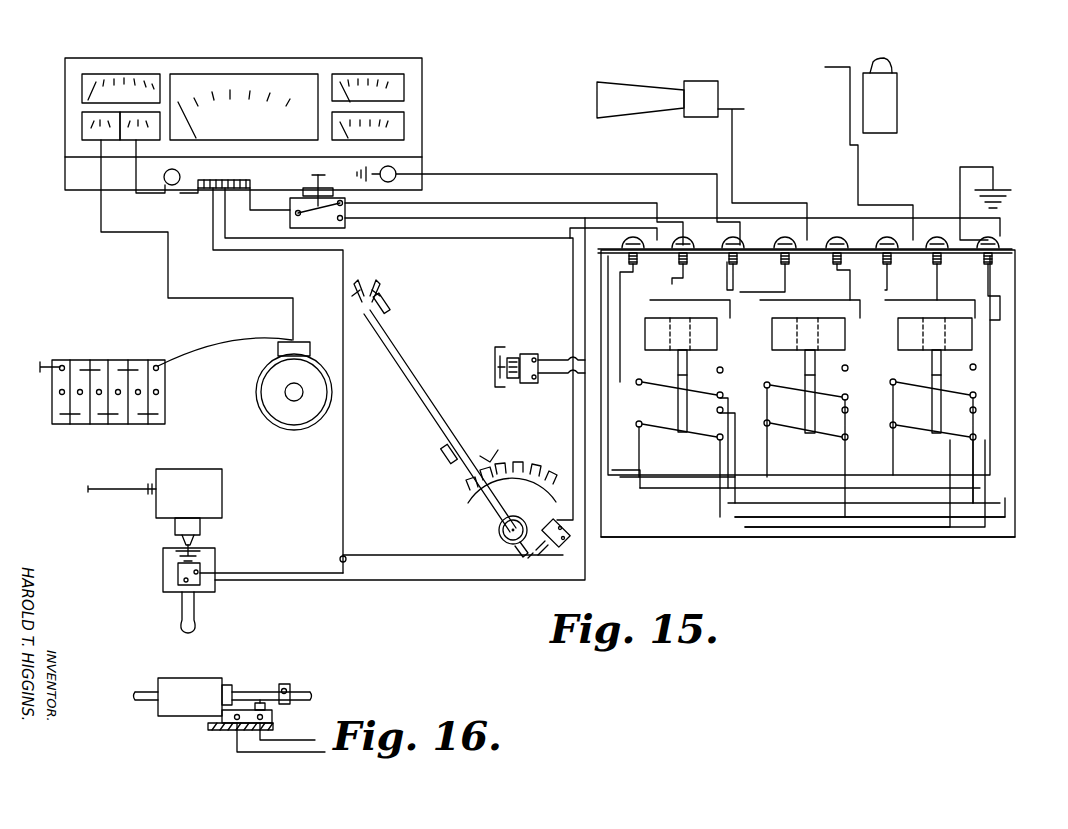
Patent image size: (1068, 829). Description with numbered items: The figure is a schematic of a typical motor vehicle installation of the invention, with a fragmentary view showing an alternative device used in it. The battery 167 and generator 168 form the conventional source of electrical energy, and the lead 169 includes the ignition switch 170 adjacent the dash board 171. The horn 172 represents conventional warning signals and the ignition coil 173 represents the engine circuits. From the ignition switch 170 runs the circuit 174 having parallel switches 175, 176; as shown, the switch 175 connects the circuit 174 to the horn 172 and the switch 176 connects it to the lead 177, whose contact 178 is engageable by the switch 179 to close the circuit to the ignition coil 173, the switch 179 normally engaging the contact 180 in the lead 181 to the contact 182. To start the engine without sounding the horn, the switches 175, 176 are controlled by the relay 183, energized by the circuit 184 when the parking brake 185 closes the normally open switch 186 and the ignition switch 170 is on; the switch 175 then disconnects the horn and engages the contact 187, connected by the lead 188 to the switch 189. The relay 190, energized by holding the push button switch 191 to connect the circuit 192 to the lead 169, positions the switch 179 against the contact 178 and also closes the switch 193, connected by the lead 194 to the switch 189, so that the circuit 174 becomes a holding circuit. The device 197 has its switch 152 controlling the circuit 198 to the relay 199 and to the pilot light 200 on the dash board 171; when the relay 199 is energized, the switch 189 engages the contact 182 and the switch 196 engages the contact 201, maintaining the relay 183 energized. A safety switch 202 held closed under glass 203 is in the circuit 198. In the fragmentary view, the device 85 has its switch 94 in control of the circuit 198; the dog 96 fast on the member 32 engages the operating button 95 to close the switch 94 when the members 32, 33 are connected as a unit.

In FIG. 15, the dash board 171 is at (72, 118).
In FIG. 15, the ignition switch 170 is at (168, 185).
In FIG. 15, the push button switch 191 is at (306, 184).
In FIG. 15, the pilot light 200 is at (400, 172).
In FIG. 15, the switch 193 is at (504, 190).
In FIG. 15, the circuit 192 is at (540, 218).
In FIG. 15, the horn 172 is at (700, 95).
In FIG. 15, the ignition coil 173 is at (885, 97).
In FIG. 15, the circuit 174 is at (446, 240).
In FIG. 15, the circuit 184 is at (572, 280).
In FIG. 15, the lead 169 is at (168, 264).
In FIG. 15, the generator 168 is at (256, 392).
In FIG. 15, the battery 167 is at (100, 424).
In FIG. 15, the device 197 is at (152, 540).
In FIG. 15, the switch 152 is at (185, 570).
In FIG. 15, the glass 203 is at (493, 362).
In FIG. 15, the safety switch 202 is at (533, 384).
In FIG. 15, the parking brake 185 is at (460, 423).
In FIG. 15, the switch 186 is at (573, 520).
In FIG. 15, the circuit 198 is at (510, 580).
In FIG. 16, the circuit 198 is at (286, 754).
In FIG. 15, the relay 199 is at (658, 318).
In FIG. 15, the relay 183 is at (790, 318).
In FIG. 15, the relay 190 is at (912, 318).
In FIG. 15, the switch 196 is at (672, 372).
In FIG. 15, the contact 201 is at (721, 373).
In FIG. 15, the contact 182 is at (717, 411).
In FIG. 15, the switch 189 is at (645, 427).
In FIG. 15, the switch 176 is at (800, 370).
In FIG. 15, the switch 175 is at (796, 424).
In FIG. 15, the contact 187 is at (844, 414).
In FIG. 15, the contact 178 is at (976, 410).
In FIG. 15, the switch 179 is at (952, 434).
In FIG. 15, the contact 180 is at (972, 442).
In FIG. 15, the lead 188 is at (674, 490).
In FIG. 15, the lead 181 is at (805, 520).
In FIG. 15, the lead 194 is at (846, 505).
In FIG. 15, the lead 177 is at (930, 537).
In FIG. 16, the device 85 is at (207, 683).
In FIG. 16, the member 33 is at (146, 690).
In FIG. 16, the member 32 is at (300, 692).
In FIG. 16, the dog 96 is at (285, 684).
In FIG. 16, the operating button 95 is at (262, 703).
In FIG. 16, the switch 94 is at (274, 716).